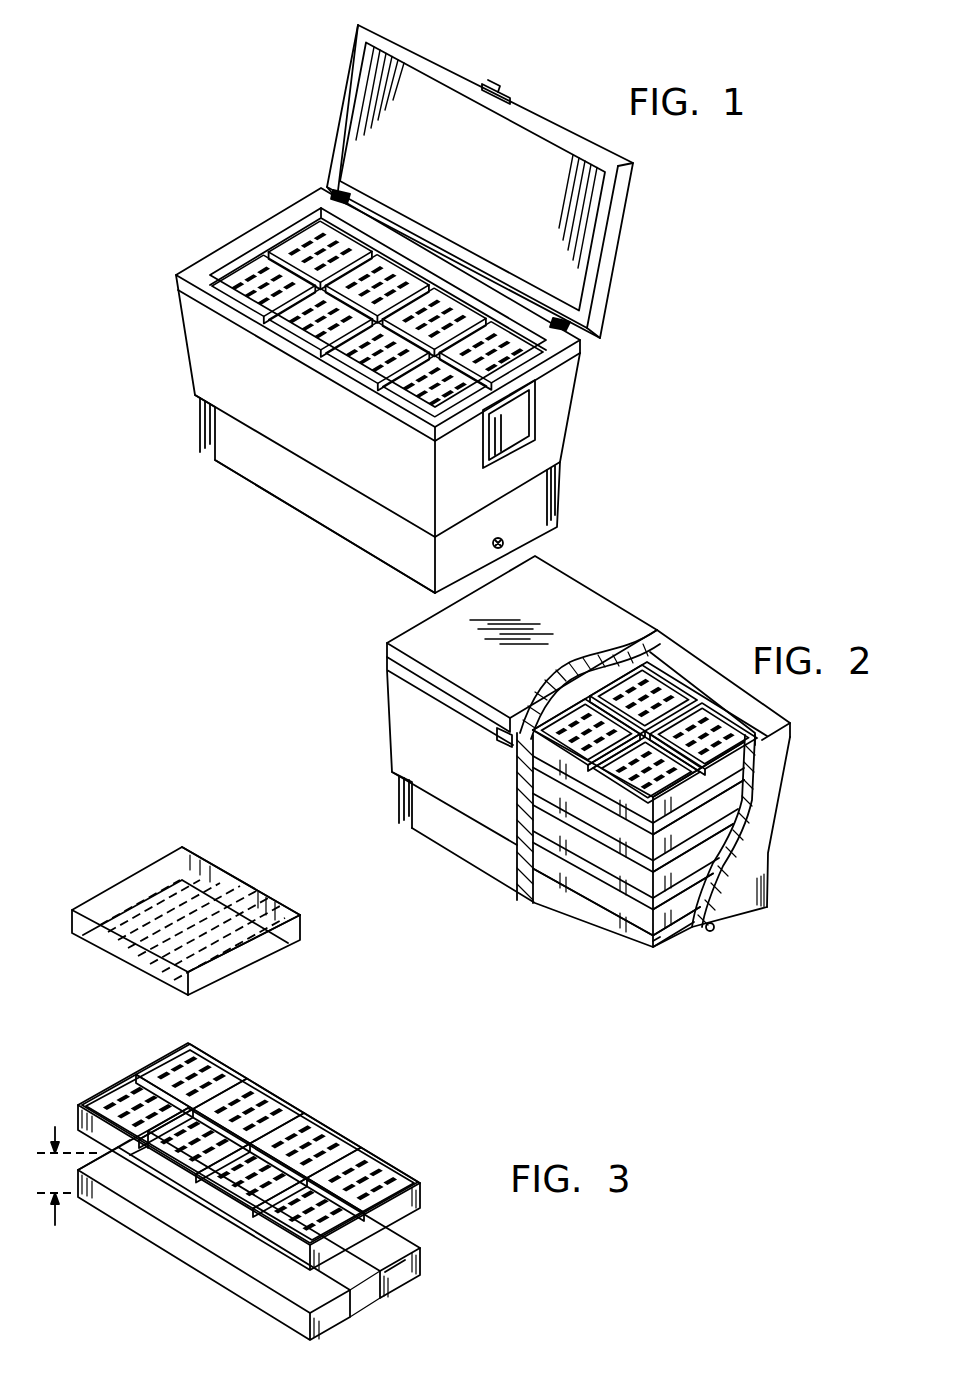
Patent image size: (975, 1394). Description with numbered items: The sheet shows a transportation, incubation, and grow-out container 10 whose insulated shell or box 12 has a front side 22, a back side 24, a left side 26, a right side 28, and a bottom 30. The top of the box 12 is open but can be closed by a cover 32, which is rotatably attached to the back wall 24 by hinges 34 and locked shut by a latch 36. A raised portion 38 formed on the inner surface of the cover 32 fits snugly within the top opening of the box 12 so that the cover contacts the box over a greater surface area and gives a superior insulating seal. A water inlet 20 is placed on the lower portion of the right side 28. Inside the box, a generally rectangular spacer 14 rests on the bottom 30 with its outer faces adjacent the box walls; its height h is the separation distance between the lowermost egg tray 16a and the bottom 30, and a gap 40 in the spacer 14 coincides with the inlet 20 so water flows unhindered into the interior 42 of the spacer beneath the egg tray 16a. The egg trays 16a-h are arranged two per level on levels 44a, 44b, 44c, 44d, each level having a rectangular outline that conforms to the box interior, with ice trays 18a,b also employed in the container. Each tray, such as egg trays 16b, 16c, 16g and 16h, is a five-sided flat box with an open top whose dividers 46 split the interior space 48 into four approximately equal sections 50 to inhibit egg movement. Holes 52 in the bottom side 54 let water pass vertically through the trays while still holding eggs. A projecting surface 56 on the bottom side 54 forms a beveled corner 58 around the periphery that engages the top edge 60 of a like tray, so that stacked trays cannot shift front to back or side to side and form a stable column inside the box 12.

In FIG. 1, the transportation, incubation, and grow-out container 10 is at (165, 116).
In FIG. 2, the transportation, incubation, and grow-out container 10 is at (682, 570).
In FIG. 1, the insulated shell 12 is at (379, 390).
In FIG. 2, the insulated shell 12 is at (559, 805).
In FIG. 2, the spacer 14 is at (653, 957).
In FIG. 3, the spacer 14 is at (273, 1225).
In FIG. 3, the egg tray 16a is at (420, 1195).
In FIG. 3, the egg tray 16b is at (230, 1090).
In FIG. 3, the egg tray 16c is at (224, 925).
In FIG. 1, the egg tray 16g is at (502, 357).
In FIG. 1, the egg tray 16h is at (298, 243).
In FIG. 1, the egg trays 16a-h is at (349, 336).
In FIG. 2, the egg trays 16a-h is at (718, 873).
In FIG. 2, the ice trays 18a,b is at (765, 798).
In FIG. 1, the water inlet 20 is at (496, 539).
In FIG. 2, the water inlet 20 is at (713, 928).
In FIG. 1, the front side 22 is at (277, 443).
In FIG. 2, the front side 22 is at (422, 822).
In FIG. 1, the back side 24 is at (515, 300).
In FIG. 2, the back side 24 is at (690, 660).
In FIG. 1, the left side 26 is at (262, 232).
In FIG. 2, the left side 26 is at (385, 705).
In FIG. 1, the right side 28 is at (556, 462).
In FIG. 2, the right side 28 is at (737, 913).
In FIG. 1, the bottom 30 is at (325, 528).
In FIG. 2, the bottom 30 is at (637, 953).
In FIG. 1, the cover 32 is at (612, 265).
In FIG. 2, the cover 32 is at (553, 609).
In FIG. 1, the hinges 34 is at (343, 195).
In FIG. 1, the latch 36 is at (512, 90).
In FIG. 2, the latch 36 is at (500, 726).
In FIG. 1, the raised portion 38 is at (558, 188).
In FIG. 2, the gap 40 is at (657, 935).
In FIG. 3, the gap 40 is at (365, 1292).
In FIG. 3, the interior 42 is at (408, 1268).
In FIG. 2, the level 44a is at (520, 778).
In FIG. 3, the level 44a is at (289, 1147).
In FIG. 2, the level 44b is at (520, 812).
In FIG. 2, the level 44c is at (540, 900).
In FIG. 2, the level 44d is at (620, 900).
In FIG. 3, the dividers 46 is at (270, 1147).
In FIG. 3, the interior space 48 is at (157, 1214).
In FIG. 3, the sections 50 is at (195, 1241).
In FIG. 3, the holes 52 is at (171, 961).
In FIG. 3, the bottom side 54 is at (292, 935).
In FIG. 3, the projecting surface 56 is at (265, 955).
In FIG. 3, the beveled corner 58 is at (215, 893).
In FIG. 3, the top edge 60 is at (390, 1156).
In FIG. 3, the height of spacer h is at (52, 1178).